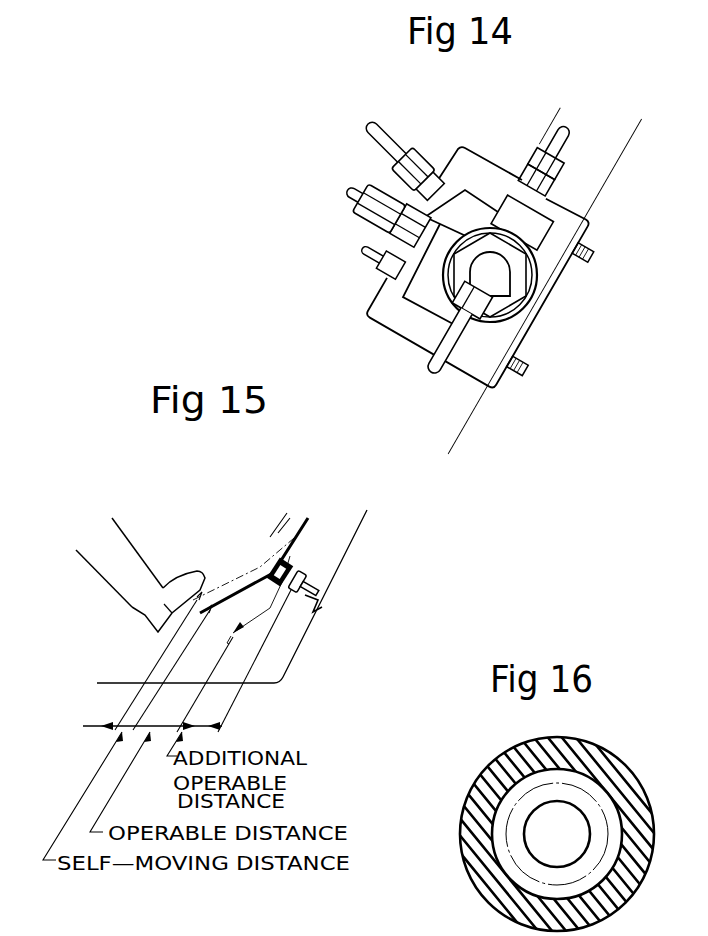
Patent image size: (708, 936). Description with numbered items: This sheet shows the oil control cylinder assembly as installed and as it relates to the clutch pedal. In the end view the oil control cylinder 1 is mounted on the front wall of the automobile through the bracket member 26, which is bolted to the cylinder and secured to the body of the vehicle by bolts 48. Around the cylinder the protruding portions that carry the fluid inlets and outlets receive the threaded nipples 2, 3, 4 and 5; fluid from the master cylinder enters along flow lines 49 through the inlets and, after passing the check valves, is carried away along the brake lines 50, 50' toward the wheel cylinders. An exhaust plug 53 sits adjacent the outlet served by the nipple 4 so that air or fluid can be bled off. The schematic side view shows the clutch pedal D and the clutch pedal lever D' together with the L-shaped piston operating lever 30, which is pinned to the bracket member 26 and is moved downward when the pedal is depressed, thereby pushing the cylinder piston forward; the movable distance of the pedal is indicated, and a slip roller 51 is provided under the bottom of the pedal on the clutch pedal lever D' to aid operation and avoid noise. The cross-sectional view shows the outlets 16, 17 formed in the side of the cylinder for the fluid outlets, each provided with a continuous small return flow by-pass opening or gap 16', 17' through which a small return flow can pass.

In FIG. 14, the oil control cylinder 1 is at (510, 290).
In FIG. 14, the nipple 2 is at (587, 218).
In FIG. 14, the nipple 3 is at (536, 310).
In FIG. 14, the nipple 4 is at (439, 178).
In FIG. 14, the nipple 5 is at (390, 243).
In FIG. 14, the bracket member 26 is at (400, 323).
In FIG. 15, the bracket member 26 is at (321, 598).
In FIG. 15, the L-shaped piston operating lever 30 is at (308, 578).
In FIG. 14, the bolts 48 is at (515, 377).
In FIG. 14, the flow lines 49 is at (567, 140).
In FIG. 14, the brake line 50 is at (348, 204).
In FIG. 14, the brake line 50' is at (384, 149).
In FIG. 15, the slip roller 51 is at (268, 566).
In FIG. 16, the slip roller 51 is at (594, 797).
In FIG. 14, the exhaust plug 53 is at (388, 274).
In FIG. 16, the outlet 16 is at (493, 793).
In FIG. 16, the outlet 17 is at (493, 793).
In FIG. 16, the return flow by-pass opening 16' is at (458, 868).
In FIG. 16, the return flow by-pass opening 17' is at (458, 868).
In FIG. 15, the clutch pedal D is at (210, 623).
In FIG. 15, the clutch pedal lever D' is at (266, 512).